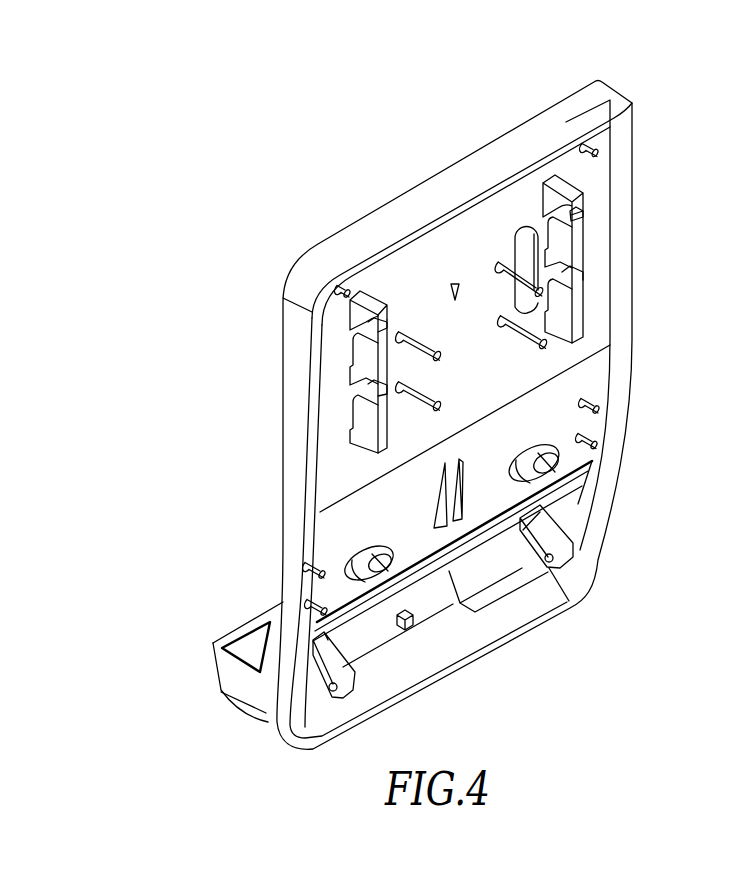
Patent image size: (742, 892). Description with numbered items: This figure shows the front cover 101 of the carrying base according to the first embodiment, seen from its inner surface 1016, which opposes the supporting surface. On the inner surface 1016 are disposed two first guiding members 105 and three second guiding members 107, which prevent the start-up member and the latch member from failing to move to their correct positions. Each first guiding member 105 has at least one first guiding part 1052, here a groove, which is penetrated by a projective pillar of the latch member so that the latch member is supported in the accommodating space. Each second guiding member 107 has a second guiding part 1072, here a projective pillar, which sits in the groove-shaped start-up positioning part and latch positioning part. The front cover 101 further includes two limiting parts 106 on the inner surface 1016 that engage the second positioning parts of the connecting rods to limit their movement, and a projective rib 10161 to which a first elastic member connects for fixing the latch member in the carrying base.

The front cover 101 is at (234, 270).
The inner surface 1016 is at (335, 390).
The first guiding member 105 is at (547, 180).
The first guiding part 1052 is at (583, 213).
The second guiding part 1072 is at (505, 272).
The second guiding member 107 is at (455, 284).
The limiting part 106 is at (350, 562).
The projective rib 10161 is at (585, 145).